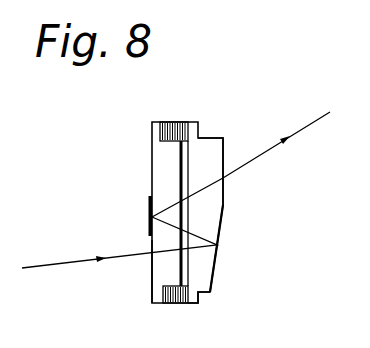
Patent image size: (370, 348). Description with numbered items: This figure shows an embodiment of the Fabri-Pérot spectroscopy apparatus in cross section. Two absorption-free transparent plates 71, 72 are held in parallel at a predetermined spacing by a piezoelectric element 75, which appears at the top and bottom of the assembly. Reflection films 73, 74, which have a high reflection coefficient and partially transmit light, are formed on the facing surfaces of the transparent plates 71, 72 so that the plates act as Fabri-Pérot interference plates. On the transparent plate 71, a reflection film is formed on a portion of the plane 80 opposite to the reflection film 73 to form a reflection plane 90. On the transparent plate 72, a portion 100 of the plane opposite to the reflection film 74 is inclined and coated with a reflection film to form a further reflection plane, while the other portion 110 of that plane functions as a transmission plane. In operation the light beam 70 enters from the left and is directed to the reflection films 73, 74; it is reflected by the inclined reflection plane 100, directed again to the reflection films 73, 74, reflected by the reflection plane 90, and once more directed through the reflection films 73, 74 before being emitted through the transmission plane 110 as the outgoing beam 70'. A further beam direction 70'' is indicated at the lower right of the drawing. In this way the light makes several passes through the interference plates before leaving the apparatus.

The light beam 70 is at (119, 242).
The reflected light beam 70' is at (250, 164).
The transmitted light beam 70'' is at (358, 340).
The transparent plate 71 is at (151, 157).
The transparent plate 72 is at (210, 158).
The reflection film 73 is at (150, 265).
The reflection film 74 is at (213, 275).
The piezoelectric element 75 is at (177, 122).
The plane 80 is at (165, 166).
The reflection plane 90 is at (150, 210).
The reflection plane 100 is at (212, 245).
The transmission plane 110 is at (223, 157).